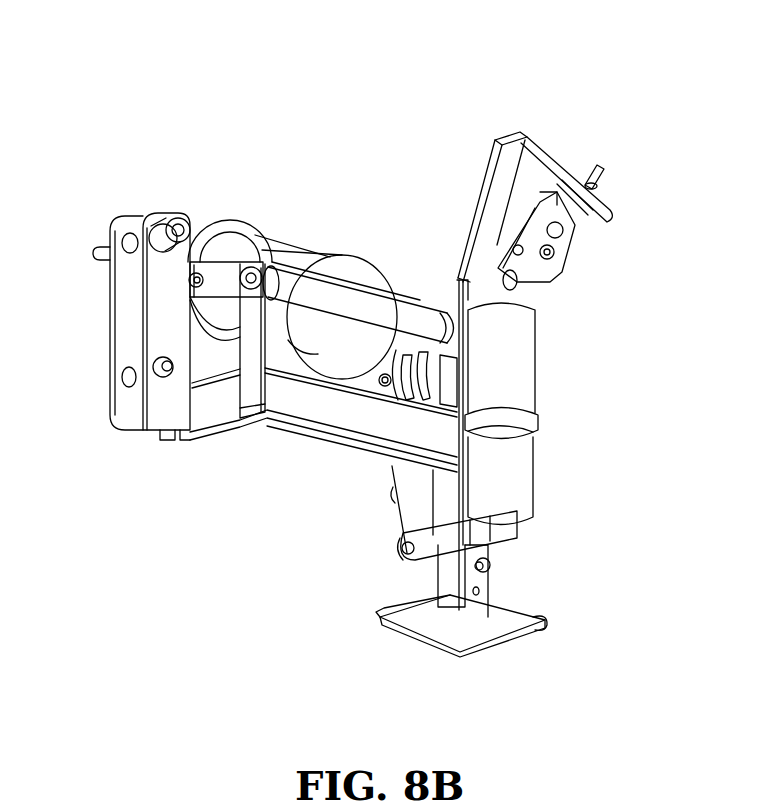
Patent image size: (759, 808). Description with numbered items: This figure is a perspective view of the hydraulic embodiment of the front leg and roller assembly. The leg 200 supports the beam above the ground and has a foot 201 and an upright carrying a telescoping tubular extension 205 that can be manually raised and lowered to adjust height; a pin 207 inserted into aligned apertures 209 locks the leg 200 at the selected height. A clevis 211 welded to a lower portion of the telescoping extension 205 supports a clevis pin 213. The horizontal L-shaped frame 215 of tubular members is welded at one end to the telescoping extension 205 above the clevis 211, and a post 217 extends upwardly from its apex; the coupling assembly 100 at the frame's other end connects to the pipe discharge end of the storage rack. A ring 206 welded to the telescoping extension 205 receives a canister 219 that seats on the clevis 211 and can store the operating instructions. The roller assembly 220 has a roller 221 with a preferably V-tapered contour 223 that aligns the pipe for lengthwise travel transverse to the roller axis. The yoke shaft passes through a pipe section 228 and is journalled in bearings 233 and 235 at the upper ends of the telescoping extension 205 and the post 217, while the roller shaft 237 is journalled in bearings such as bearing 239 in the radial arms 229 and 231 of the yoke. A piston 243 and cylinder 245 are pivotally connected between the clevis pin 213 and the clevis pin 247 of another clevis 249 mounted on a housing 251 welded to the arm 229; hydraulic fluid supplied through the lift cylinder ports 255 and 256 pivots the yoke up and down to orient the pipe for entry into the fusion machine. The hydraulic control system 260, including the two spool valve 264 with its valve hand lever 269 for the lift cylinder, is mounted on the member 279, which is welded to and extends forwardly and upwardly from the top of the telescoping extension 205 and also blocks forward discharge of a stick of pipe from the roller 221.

The coupling assembly 100 is at (120, 322).
The leg 200 is at (215, 616).
The foot 201 is at (432, 635).
The telescoping tubular extension 205 is at (480, 607).
The ring 206 is at (535, 423).
The pin 207 is at (498, 550).
The apertures 209 is at (480, 588).
The clevis 211 is at (432, 550).
The clevis pin 213 is at (413, 550).
The L-shaped frame 215 is at (340, 412).
The post 217 is at (250, 398).
The canister 219 is at (520, 473).
The roller assembly 220 is at (240, 92).
The roller 221 is at (365, 253).
The contour 223 is at (330, 257).
The pipe section 228 is at (397, 345).
The radial arm 229 is at (412, 343).
The radial arm 231 is at (217, 288).
The bearing 233 is at (395, 318).
The bearing 235 is at (268, 262).
The roller shaft 237 is at (197, 272).
The bearing 239 is at (203, 255).
The piston 243 is at (405, 397).
The cylinder 245 is at (420, 508).
The clevis pin 247 is at (384, 377).
The clevis 249 is at (393, 303).
The housing 251 is at (407, 312).
The lift cylinder port 255 is at (392, 492).
The lift cylinder port 256 is at (400, 545).
The hydraulic control system 260 is at (612, 70).
The two spool valve 264 is at (550, 258).
The valve hand lever 269 is at (600, 173).
The member 279 is at (488, 183).